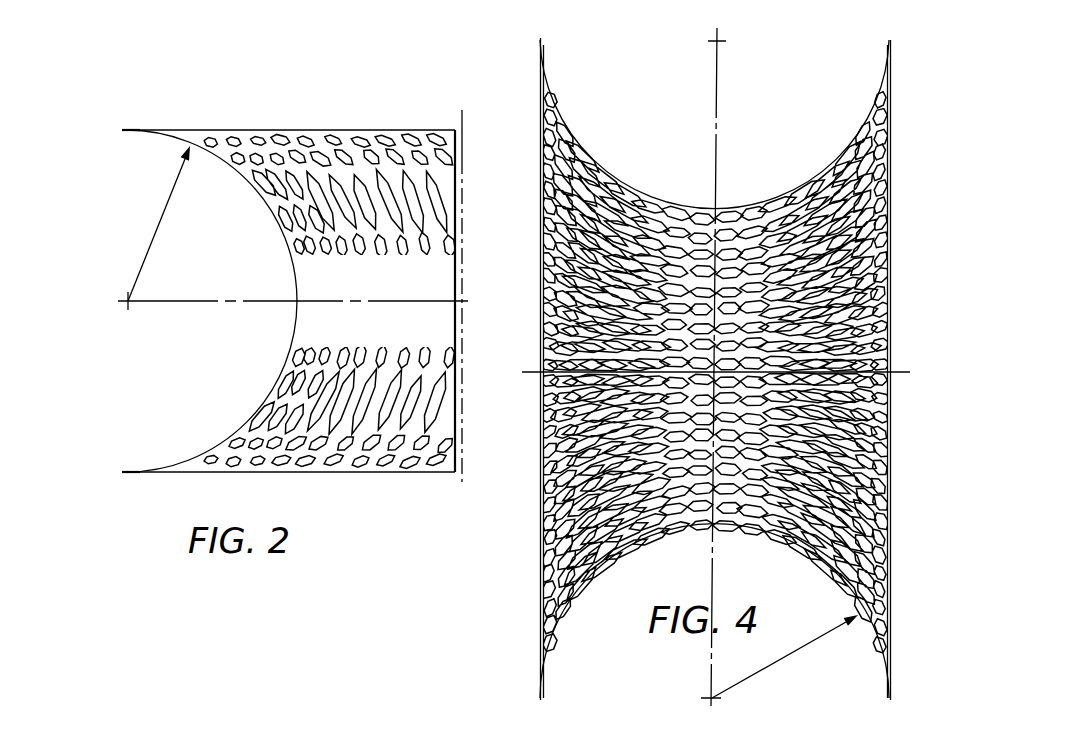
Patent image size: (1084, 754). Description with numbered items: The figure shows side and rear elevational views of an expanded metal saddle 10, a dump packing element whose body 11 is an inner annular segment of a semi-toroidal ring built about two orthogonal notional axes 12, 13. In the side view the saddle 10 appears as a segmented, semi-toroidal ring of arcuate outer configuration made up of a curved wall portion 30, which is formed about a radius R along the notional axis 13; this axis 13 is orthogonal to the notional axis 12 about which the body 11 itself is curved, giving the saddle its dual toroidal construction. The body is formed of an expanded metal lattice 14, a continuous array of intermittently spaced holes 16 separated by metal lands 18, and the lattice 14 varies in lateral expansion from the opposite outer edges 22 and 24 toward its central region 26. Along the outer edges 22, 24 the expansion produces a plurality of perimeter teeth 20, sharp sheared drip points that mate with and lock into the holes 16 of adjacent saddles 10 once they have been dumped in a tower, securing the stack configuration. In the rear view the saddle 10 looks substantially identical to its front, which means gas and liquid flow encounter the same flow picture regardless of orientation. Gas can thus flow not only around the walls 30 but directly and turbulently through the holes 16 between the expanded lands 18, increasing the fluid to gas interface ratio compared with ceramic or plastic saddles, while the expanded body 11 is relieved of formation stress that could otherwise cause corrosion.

In FIG. 2, the expanded metal saddle 10 is at (349, 125).
In FIG. 4, the expanded metal saddle 10 is at (900, 219).
In FIG. 2, the body 11 is at (264, 412).
In FIG. 2, the notional axis 12 is at (462, 137).
In FIG. 4, the notional axis 12 is at (872, 347).
In FIG. 2, the notional axis 13 is at (462, 303).
In FIG. 4, the notional axis 13 is at (720, 70).
In FIG. 4, the expanded metal lattice 14 is at (847, 178).
In FIG. 2, the holes 16 is at (236, 473).
In FIG. 4, the holes 16 is at (877, 415).
In FIG. 2, the metal lands 18 is at (278, 138).
In FIG. 4, the metal lands 18 is at (865, 483).
In FIG. 2, the perimeter teeth 20 is at (140, 129).
In FIG. 4, the perimeter teeth 20 is at (547, 38).
In FIG. 2, the outer edge 22 is at (127, 130).
In FIG. 2, the outer edge 24 is at (133, 472).
In FIG. 4, the outer edge 24 is at (542, 98).
In FIG. 4, the central region 26 is at (732, 200).
In FIG. 2, the curved wall portion 30 is at (274, 207).
In FIG. 4, the curved wall portion 30 is at (600, 172).